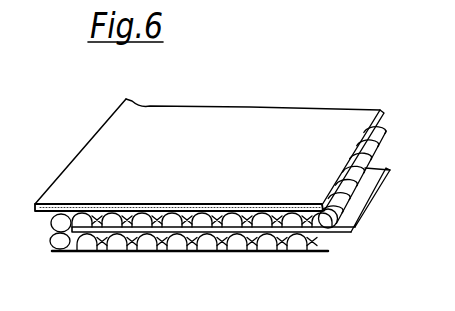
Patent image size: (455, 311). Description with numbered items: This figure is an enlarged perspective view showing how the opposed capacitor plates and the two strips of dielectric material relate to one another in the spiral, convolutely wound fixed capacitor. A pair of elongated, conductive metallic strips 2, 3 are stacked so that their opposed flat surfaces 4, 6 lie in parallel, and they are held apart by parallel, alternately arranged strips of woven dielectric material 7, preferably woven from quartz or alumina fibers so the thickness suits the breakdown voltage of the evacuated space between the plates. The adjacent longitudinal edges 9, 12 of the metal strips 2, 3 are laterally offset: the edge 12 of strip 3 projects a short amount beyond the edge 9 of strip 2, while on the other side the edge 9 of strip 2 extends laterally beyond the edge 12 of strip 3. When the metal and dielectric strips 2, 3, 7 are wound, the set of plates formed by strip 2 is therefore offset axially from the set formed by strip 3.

The conductive metallic strip 2 is at (94, 141).
The conductive metallic strip 3 is at (372, 200).
The flat surface 4 is at (118, 212).
The flat surface 6 is at (219, 234).
The strip of woven dielectric material 7 is at (182, 212).
The longitudinal edge 9 is at (112, 115).
The longitudinal edge 12 is at (58, 243).